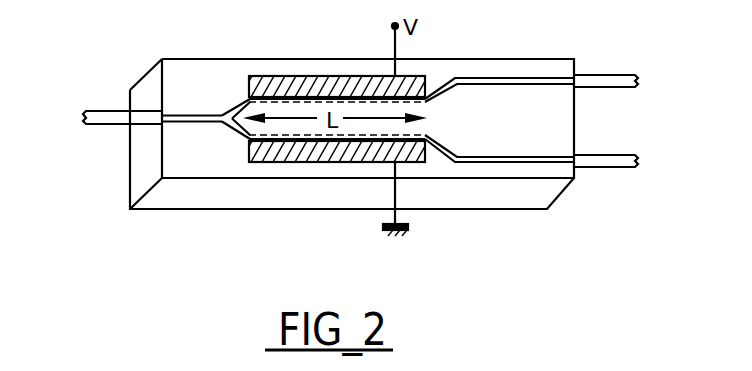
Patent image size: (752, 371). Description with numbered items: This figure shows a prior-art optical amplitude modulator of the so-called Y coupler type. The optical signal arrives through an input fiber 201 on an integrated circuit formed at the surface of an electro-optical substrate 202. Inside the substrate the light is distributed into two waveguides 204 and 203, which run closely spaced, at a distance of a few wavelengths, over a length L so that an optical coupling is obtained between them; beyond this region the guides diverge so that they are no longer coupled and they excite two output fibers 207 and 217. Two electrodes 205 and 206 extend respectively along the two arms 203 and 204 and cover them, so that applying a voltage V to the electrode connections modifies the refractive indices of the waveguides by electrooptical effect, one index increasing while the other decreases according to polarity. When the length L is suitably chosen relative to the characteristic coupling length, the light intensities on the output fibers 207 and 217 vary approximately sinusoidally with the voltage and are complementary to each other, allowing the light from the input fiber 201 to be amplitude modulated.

The input fiber 201 is at (107, 111).
The electro-optical substrate 202 is at (195, 198).
The waveguide 203 is at (433, 131).
The waveguide 204 is at (427, 103).
The electrode 205 is at (248, 157).
The electrode 206 is at (308, 76).
The output fiber 207 is at (599, 78).
The output fiber 217 is at (590, 156).